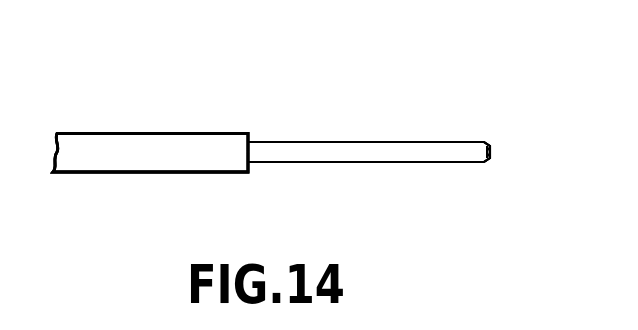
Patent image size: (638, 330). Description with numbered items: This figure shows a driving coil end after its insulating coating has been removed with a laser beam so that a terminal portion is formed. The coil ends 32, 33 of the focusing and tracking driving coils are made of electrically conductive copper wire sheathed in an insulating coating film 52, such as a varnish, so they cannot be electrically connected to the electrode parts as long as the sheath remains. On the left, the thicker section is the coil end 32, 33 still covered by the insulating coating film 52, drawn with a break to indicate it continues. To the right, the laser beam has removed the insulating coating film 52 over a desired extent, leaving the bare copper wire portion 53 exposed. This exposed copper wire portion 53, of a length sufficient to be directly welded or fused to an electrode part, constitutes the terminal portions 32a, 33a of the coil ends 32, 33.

The coil end 32 is at (233, 134).
The coil end 33 is at (150, 153).
The insulating coating film 52 is at (182, 172).
The copper wire portion 53 is at (378, 142).
The terminal portion 32a is at (413, 153).
The terminal portion 33a is at (487, 152).